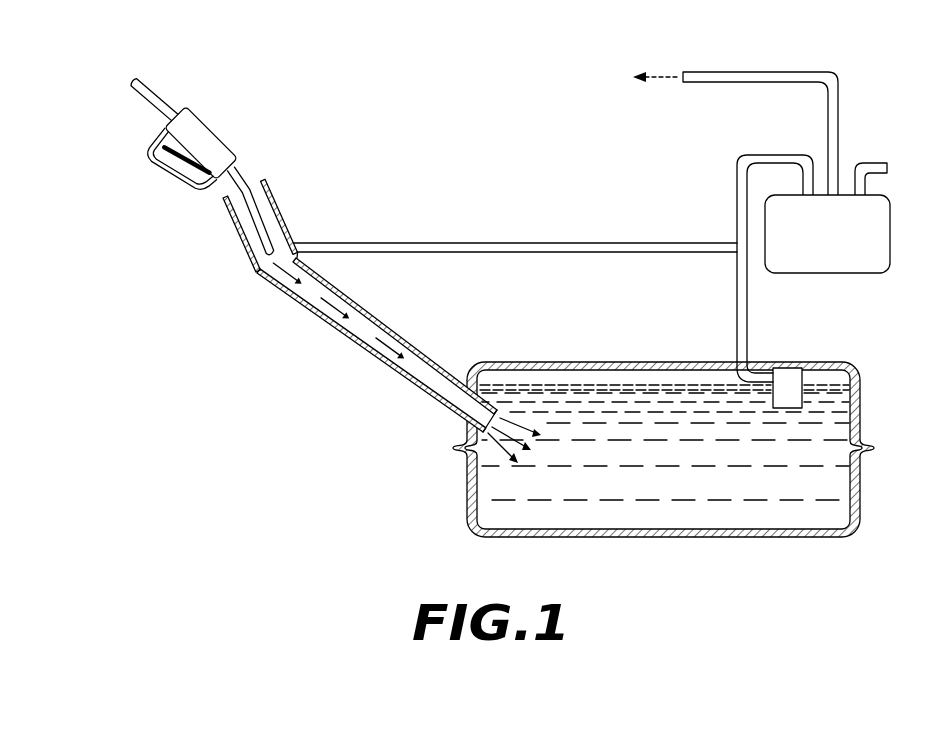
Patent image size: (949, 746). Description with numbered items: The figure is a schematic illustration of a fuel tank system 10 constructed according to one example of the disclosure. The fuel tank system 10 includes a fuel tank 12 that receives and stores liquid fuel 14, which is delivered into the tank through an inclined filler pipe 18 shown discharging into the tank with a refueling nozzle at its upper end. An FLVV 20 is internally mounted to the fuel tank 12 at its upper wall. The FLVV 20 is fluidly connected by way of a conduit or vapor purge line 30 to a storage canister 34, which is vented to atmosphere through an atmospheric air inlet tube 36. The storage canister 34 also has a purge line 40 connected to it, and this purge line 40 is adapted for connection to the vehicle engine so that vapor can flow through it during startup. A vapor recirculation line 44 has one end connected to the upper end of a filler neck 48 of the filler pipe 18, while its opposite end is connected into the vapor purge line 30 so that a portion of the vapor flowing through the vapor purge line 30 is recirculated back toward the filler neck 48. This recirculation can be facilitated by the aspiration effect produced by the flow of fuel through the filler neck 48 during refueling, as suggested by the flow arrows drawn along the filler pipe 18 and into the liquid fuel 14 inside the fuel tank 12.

The fuel tank system 10 is at (402, 57).
The fuel tank 12 is at (860, 380).
The liquid fuel 14 is at (681, 485).
The filler pipe 18 is at (377, 355).
The FLVV 20 is at (789, 384).
The vapor purge line 30 is at (738, 208).
The storage canister 34 is at (870, 233).
The atmospheric air inlet tube 36 is at (877, 164).
The purge line 40 is at (753, 72).
The vapor recirculation line 44 is at (517, 243).
The filler neck 48 is at (287, 213).